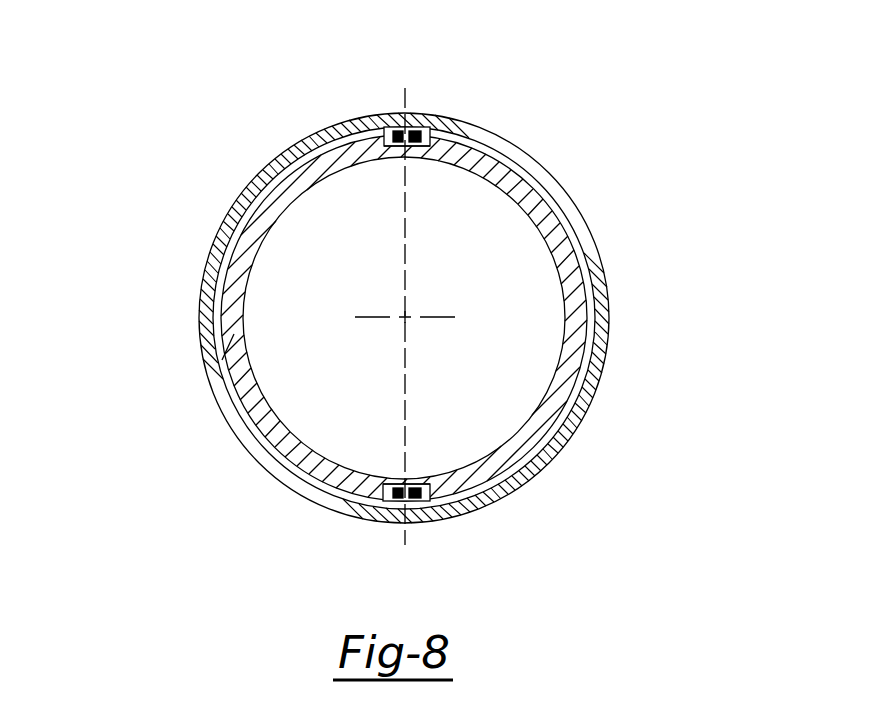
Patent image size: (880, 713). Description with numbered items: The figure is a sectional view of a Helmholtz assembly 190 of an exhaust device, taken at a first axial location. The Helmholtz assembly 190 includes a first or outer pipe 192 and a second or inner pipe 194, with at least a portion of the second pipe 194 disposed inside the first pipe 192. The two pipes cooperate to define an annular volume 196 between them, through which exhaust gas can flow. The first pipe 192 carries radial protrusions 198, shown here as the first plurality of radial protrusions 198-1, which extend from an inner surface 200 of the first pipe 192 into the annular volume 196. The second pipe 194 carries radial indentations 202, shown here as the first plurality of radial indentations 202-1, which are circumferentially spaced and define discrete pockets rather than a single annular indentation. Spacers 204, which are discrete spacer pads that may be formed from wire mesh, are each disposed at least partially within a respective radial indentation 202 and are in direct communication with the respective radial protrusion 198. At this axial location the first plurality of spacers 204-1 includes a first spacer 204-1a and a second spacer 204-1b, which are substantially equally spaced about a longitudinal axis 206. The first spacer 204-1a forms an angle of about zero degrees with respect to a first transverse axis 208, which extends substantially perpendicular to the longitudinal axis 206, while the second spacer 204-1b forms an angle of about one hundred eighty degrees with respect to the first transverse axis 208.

The Helmholtz assembly 190 is at (231, 145).
The first pipe 192 is at (583, 218).
The second pipe 194 is at (567, 270).
The annular volume 196 is at (590, 333).
The radial protrusions 198 is at (402, 126).
The first plurality of radial protrusions 198-1 is at (407, 314).
The inner surface 200 is at (222, 360).
The radial indentations 202 is at (440, 160).
The first plurality of radial indentations 202-1 is at (406, 315).
The spacers 204 is at (380, 132).
The first plurality of spacers 204-1 is at (406, 314).
The first spacer 204-1a is at (407, 136).
The second spacer 204-1b is at (406, 492).
The longitudinal axis 206 is at (408, 320).
The first transverse axis 208 is at (410, 97).